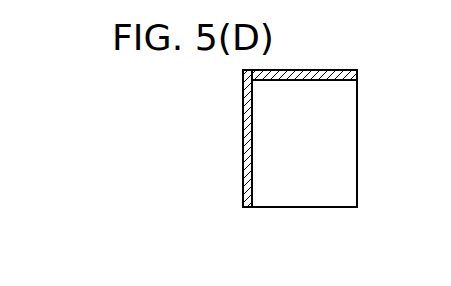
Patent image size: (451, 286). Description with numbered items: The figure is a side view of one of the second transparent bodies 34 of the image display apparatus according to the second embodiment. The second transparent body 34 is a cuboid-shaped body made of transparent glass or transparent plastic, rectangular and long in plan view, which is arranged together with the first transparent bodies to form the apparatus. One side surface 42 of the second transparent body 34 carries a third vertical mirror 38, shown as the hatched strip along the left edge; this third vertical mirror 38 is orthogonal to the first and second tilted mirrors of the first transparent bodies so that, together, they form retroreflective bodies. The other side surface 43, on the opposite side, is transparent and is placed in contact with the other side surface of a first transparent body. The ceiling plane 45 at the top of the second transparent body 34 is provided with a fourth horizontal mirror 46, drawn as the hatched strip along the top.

The second transparent body 34 is at (360, 137).
The third vertical mirror 38 is at (243, 183).
The one side surface 42 is at (243, 106).
The other side surface 43 is at (357, 175).
The ceiling plane 45 is at (316, 70).
The fourth horizontal mirror 46 is at (297, 83).